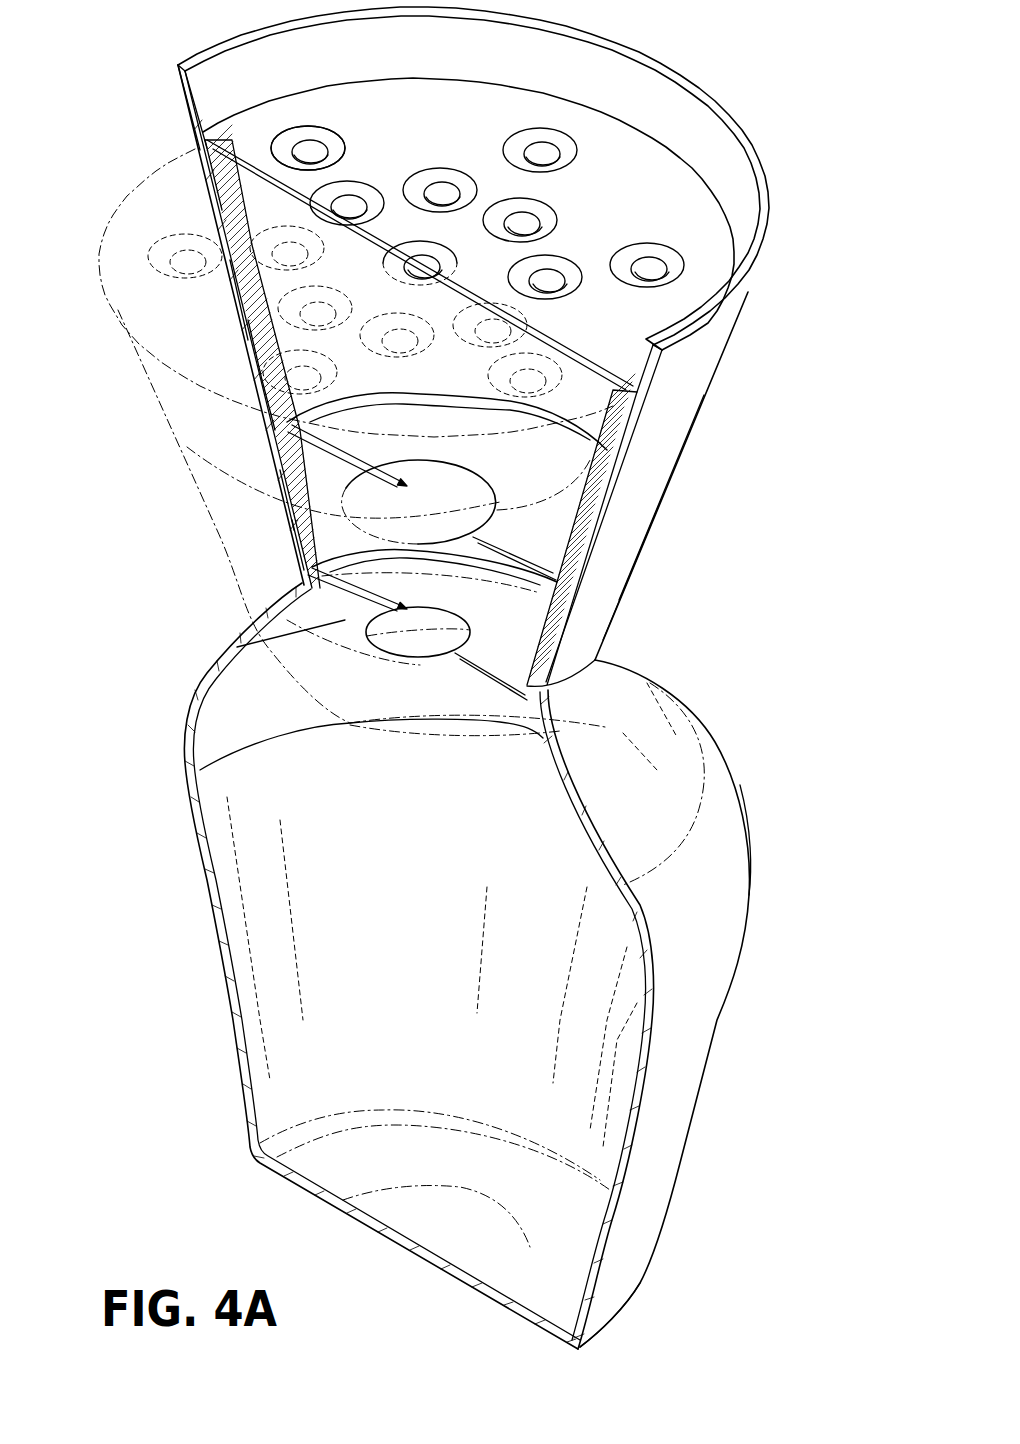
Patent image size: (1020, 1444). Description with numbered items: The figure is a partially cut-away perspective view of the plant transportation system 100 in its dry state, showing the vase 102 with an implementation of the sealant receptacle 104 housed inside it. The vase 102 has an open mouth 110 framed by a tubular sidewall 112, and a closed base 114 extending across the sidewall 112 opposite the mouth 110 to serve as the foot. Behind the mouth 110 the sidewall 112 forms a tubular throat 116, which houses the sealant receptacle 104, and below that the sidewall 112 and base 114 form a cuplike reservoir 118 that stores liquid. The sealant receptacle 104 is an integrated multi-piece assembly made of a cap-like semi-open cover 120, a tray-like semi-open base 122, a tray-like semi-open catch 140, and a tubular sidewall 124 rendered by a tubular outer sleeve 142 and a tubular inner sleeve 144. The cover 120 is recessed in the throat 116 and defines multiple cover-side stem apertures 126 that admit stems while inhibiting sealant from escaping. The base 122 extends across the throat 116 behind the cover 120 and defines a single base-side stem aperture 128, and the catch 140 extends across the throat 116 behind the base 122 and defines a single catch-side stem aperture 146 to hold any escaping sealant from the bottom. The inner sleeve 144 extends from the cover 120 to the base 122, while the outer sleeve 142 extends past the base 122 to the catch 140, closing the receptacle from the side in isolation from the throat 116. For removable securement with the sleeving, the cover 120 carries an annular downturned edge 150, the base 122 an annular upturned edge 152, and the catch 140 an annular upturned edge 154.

The plant transportation system 100 is at (716, 740).
The vase 102 is at (673, 457).
The sealant receptacle 104 is at (712, 193).
The open mouth 110 is at (684, 111).
The tubular sidewall 112 is at (639, 553).
The closed base 114 is at (630, 1307).
The tubular throat 116 is at (658, 503).
The cuplike reservoir 118 is at (750, 857).
The semi-open cover 120 is at (178, 68).
The semi-open base 122 is at (260, 403).
The tubular sidewall 124 is at (237, 300).
The cover-side stem apertures 126 is at (306, 148).
The base-side stem aperture 128 is at (283, 447).
The semi-open catch 140 is at (298, 537).
The tubular outer sleeve 142 is at (552, 602).
The tubular inner sleeve 144 is at (587, 478).
The catch-side stem aperture 146 is at (300, 580).
The annular downturned edge 150 is at (205, 200).
The annular upturned edge 152 is at (260, 346).
The annular upturned edge 154 is at (290, 505).